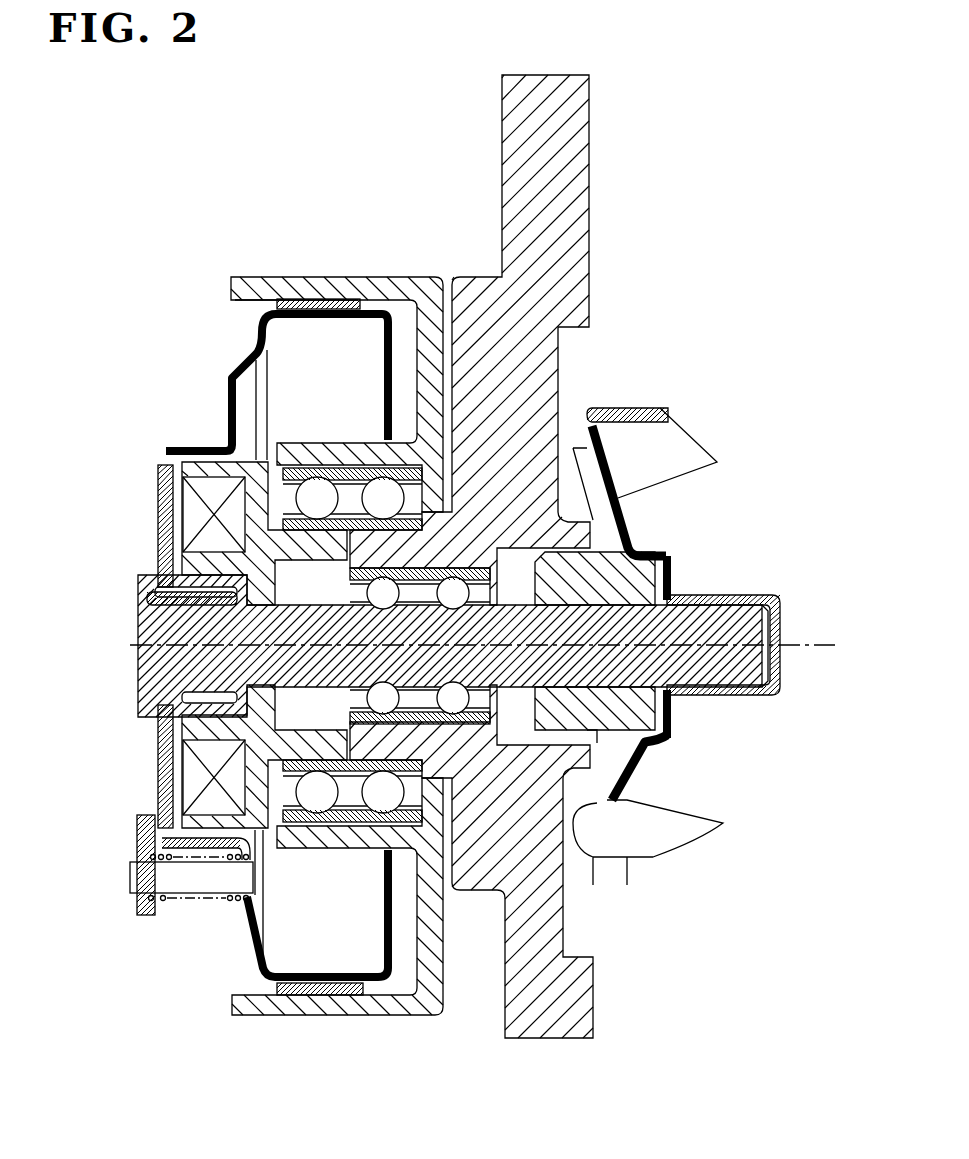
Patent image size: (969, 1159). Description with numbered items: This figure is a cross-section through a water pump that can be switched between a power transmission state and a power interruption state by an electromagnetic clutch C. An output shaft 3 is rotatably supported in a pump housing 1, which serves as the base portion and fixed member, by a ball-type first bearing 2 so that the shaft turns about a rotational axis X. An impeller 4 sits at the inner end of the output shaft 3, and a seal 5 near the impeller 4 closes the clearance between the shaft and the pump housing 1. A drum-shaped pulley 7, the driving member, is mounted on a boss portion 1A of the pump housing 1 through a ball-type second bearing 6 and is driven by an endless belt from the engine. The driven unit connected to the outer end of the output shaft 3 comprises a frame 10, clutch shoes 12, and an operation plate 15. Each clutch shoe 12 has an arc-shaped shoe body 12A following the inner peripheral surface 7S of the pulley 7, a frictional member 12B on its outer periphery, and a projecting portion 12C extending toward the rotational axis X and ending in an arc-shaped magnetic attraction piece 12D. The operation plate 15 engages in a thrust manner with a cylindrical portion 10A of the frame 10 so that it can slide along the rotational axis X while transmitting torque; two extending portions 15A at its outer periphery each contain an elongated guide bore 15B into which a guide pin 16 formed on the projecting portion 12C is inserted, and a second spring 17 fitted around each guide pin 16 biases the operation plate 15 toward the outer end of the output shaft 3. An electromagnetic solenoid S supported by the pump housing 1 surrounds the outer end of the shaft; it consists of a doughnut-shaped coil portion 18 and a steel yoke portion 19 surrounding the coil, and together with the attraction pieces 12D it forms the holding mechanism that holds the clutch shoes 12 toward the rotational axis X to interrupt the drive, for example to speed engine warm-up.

The pump housing 1 is at (578, 130).
The boss portion 1A is at (400, 740).
The first bearing 2 is at (455, 593).
The output shaft 3 is at (718, 676).
The impeller 4 is at (680, 440).
The seal 5 is at (645, 578).
The second bearing 6 is at (383, 498).
The pulley 7 is at (400, 280).
The inner peripheral surface 7S is at (252, 301).
The frame 10 is at (138, 606).
The cylindrical portion 10A is at (165, 705).
The clutch shoe 12 is at (250, 345).
The shoe body 12A is at (300, 318).
The frictional member 12B is at (330, 298).
The projecting portion 12C is at (223, 393).
The attraction piece 12D is at (160, 447).
The operation plate 15 is at (160, 548).
The extending portion 15A is at (142, 917).
The guide bore 15B is at (133, 880).
The guide pin 16 is at (140, 882).
The second spring 17 is at (166, 902).
The coil portion 18 is at (190, 523).
The yoke portion 19 is at (190, 472).
The electromagnetic clutch C is at (135, 403).
The electromagnetic solenoid S is at (212, 470).
The rotational axis X is at (493, 650).